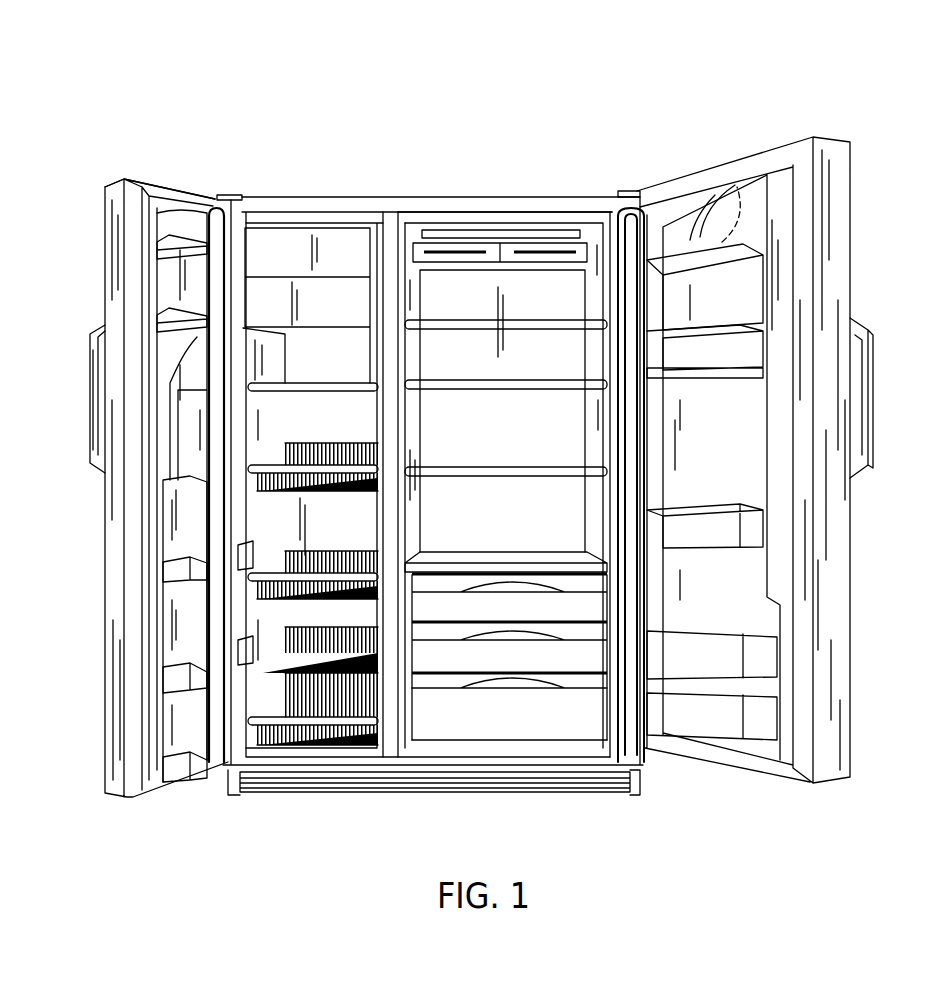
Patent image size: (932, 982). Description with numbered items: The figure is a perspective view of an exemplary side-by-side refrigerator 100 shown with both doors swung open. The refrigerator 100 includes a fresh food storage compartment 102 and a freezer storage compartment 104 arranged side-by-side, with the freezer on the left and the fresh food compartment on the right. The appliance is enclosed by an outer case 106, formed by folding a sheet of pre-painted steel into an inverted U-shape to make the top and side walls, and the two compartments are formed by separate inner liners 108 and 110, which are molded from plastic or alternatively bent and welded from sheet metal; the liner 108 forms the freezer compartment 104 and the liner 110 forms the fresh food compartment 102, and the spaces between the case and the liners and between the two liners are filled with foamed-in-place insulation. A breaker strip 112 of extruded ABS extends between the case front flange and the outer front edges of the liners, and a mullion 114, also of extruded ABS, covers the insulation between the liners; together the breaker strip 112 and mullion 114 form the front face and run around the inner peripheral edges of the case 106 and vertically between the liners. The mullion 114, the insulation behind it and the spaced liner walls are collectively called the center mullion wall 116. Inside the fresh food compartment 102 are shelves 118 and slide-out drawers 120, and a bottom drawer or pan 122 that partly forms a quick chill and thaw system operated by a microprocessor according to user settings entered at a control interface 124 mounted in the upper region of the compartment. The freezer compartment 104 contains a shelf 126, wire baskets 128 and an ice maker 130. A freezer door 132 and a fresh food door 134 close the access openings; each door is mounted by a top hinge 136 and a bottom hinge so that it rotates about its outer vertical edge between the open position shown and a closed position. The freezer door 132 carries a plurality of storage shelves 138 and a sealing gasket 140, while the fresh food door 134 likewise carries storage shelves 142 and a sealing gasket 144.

The refrigerator 100 is at (432, 70).
The fresh food storage compartment 102 is at (603, 213).
The freezer storage compartment 104 is at (338, 240).
The outer case 106 is at (468, 183).
The inner liner 108 is at (508, 225).
The inner liner 110 is at (282, 222).
The breaker strip 112 is at (577, 207).
The mullion 114 is at (385, 447).
The center mullion wall 116 is at (425, 403).
The shelves 118 is at (528, 328).
The slide-out drawers 120 is at (532, 617).
The bottom drawer or pan 122 is at (529, 727).
The control interface 124 is at (452, 232).
The shelf 126 is at (310, 395).
The wire baskets 128 is at (280, 565).
The ice maker 130 is at (313, 313).
The freezer door 132 is at (95, 209).
The fresh food door 134 is at (884, 211).
The top hinge 136 is at (230, 196).
The storage shelves 138 is at (173, 770).
The sealing gasket 140 is at (146, 188).
The storage shelves 142 is at (683, 517).
The sealing gasket 144 is at (760, 165).